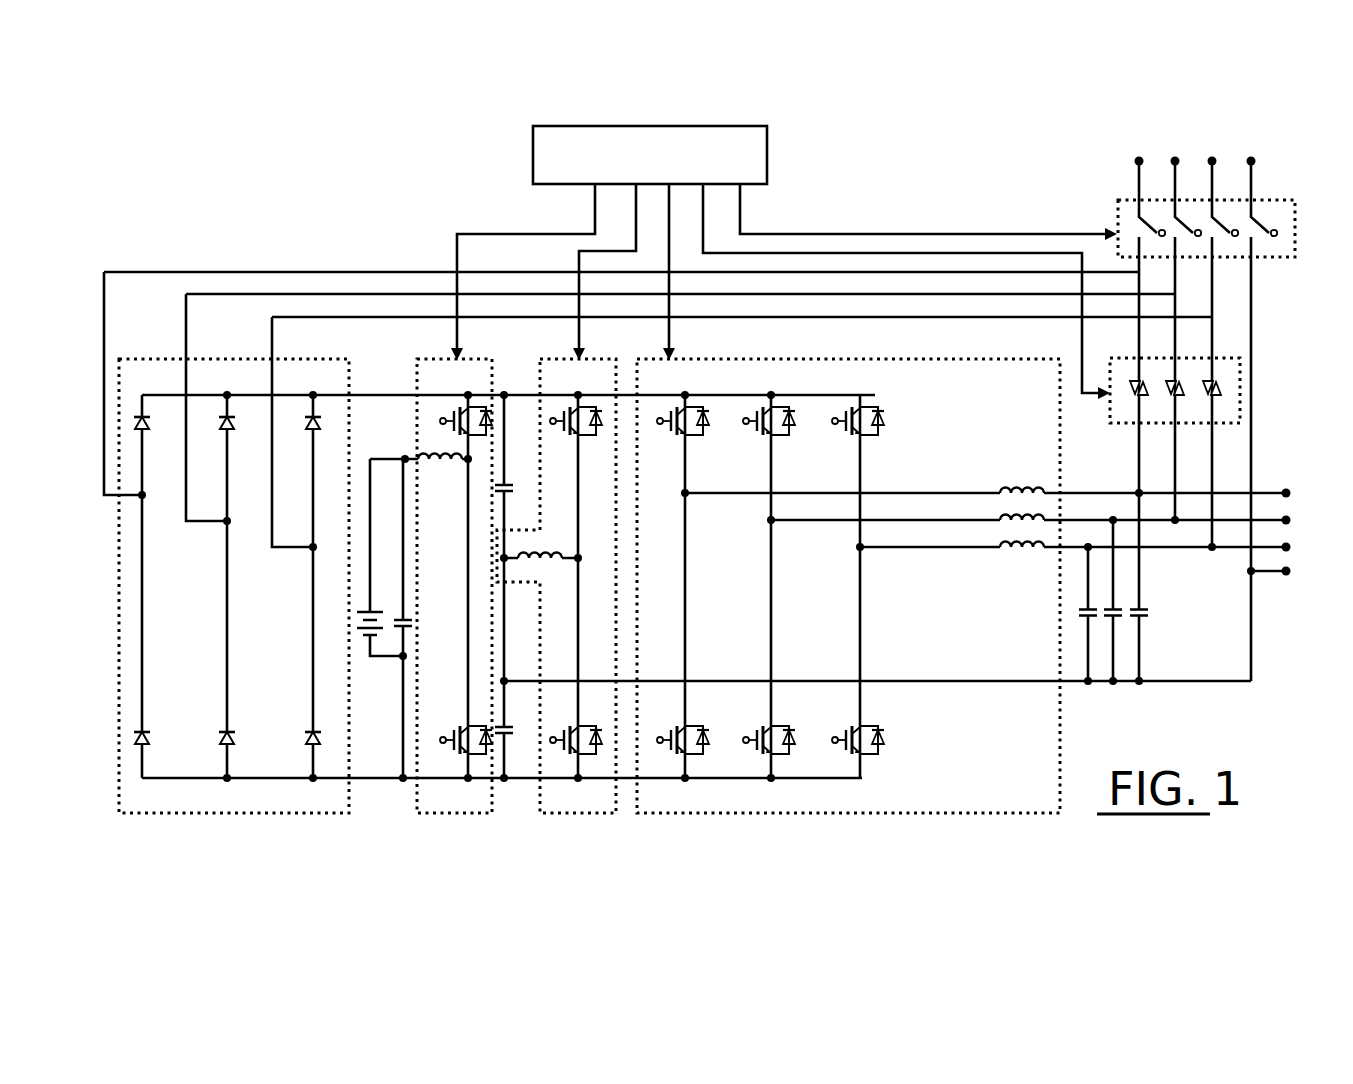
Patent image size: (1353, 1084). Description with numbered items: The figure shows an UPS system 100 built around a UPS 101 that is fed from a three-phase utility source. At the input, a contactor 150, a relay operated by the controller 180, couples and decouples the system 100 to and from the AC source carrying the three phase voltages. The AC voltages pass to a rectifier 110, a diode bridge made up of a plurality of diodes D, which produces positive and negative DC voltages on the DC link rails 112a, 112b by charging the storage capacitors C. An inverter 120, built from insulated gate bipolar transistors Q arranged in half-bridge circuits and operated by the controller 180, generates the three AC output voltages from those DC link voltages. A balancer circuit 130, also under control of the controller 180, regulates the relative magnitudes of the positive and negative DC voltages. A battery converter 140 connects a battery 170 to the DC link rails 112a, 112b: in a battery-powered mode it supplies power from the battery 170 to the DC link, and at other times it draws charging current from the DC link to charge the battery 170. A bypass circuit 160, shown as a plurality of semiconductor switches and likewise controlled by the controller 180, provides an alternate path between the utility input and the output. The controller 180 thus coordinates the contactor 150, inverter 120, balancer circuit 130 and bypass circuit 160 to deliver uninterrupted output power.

The UPS system 100 is at (455, 120).
The UPS 101 is at (84, 410).
The rectifier 110 is at (118, 795).
The DC link rail (positive) 112a is at (388, 394).
The DC link rail (negative) 112b is at (330, 779).
The inverter 120 is at (858, 815).
The balancer circuit 130 is at (578, 815).
The battery converter 140 is at (450, 815).
The contactor 150 is at (1295, 235).
The bypass circuit 160 is at (1240, 385).
The battery 170 is at (357, 631).
The controller 180 is at (767, 157).
The diodes D is at (143, 730).
The insulated gate bipolar transistors Q is at (688, 436).
The storage capacitors C is at (508, 586).